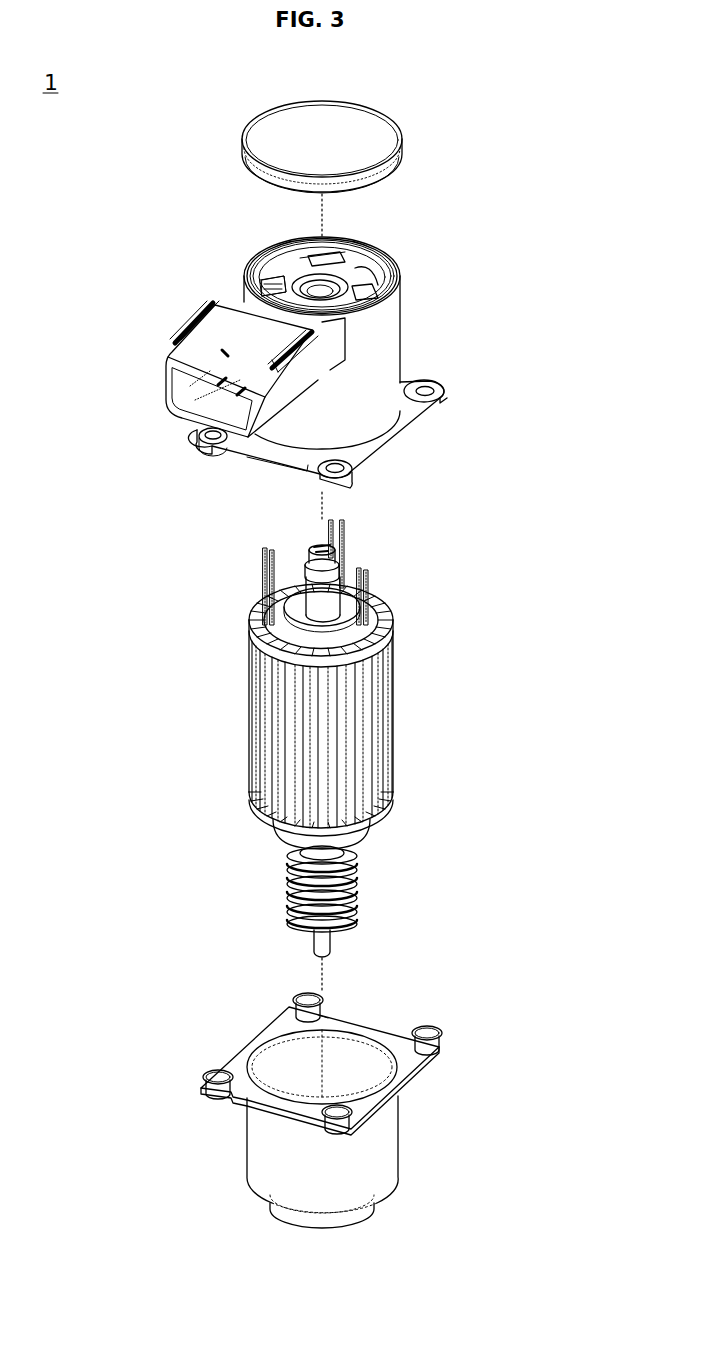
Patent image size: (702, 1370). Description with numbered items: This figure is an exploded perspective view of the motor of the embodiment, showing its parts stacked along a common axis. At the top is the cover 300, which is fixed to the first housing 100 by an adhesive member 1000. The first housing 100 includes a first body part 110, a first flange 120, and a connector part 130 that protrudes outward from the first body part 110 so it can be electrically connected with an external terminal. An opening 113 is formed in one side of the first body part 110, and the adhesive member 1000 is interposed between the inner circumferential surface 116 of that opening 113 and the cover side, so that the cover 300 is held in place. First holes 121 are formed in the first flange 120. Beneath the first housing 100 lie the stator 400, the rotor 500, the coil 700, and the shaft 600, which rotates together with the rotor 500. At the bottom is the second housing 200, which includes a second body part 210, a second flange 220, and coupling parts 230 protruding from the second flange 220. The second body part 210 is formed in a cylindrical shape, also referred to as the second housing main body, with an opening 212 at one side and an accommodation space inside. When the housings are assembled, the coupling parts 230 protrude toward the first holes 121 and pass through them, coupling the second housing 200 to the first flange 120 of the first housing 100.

The cover 300 is at (277, 128).
The first housing 100 is at (335, 348).
The first body part 110 is at (398, 331).
The opening 113 is at (245, 268).
The inner circumferential surface 116 is at (368, 250).
The adhesive member 1000 is at (430, 260).
The connector part 130 is at (312, 387).
The first flange 120 is at (420, 408).
The first holes 121 is at (200, 432).
The stator 400 is at (377, 684).
The rotor 500 is at (357, 585).
The coil 700 is at (359, 572).
The shaft 600 is at (318, 950).
The second housing 200 is at (333, 1097).
The second body part 210 is at (385, 1128).
The opening 212 is at (350, 1060).
The second flange 220 is at (415, 1059).
The coupling parts 230 is at (293, 1003).